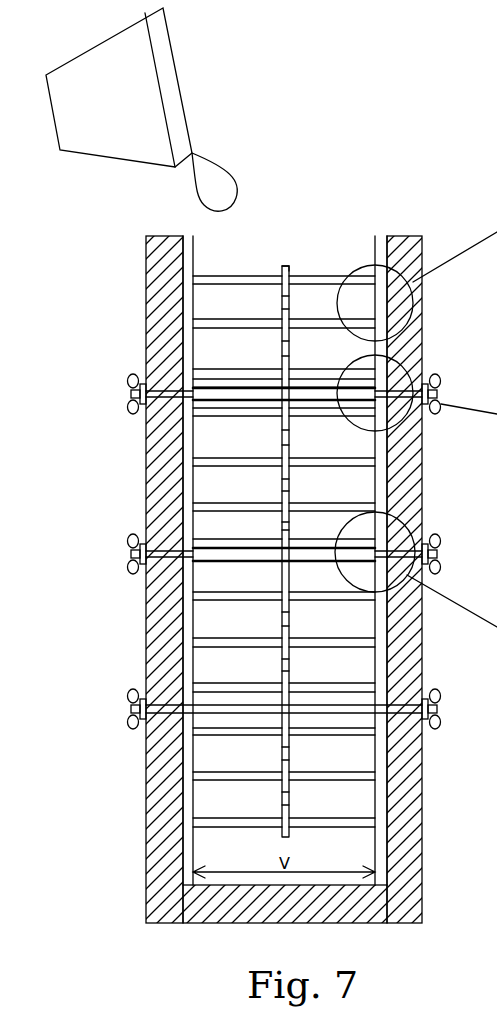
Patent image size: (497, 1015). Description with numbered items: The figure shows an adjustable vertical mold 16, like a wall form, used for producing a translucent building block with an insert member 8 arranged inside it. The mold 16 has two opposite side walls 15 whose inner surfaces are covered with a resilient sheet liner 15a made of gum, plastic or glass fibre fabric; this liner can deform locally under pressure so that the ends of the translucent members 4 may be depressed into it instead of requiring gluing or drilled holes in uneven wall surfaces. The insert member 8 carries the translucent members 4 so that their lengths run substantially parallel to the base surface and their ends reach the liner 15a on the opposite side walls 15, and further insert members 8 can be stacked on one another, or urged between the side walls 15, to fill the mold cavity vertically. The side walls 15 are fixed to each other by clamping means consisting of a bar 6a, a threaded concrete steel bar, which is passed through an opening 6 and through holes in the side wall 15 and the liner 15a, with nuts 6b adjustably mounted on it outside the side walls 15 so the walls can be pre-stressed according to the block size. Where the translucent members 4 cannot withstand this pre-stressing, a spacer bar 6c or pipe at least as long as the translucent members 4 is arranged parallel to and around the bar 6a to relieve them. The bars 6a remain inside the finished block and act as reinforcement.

The translucent member 4 is at (310, 280).
The opening 6 is at (288, 806).
The bar 6a is at (240, 394).
The wing nuts 6b is at (130, 382).
The spacer bar 6c is at (236, 388).
The insert member 8 is at (290, 265).
The side wall 15 is at (163, 265).
The sheet liner 15a is at (165, 640).
The mold 16 is at (114, 884).